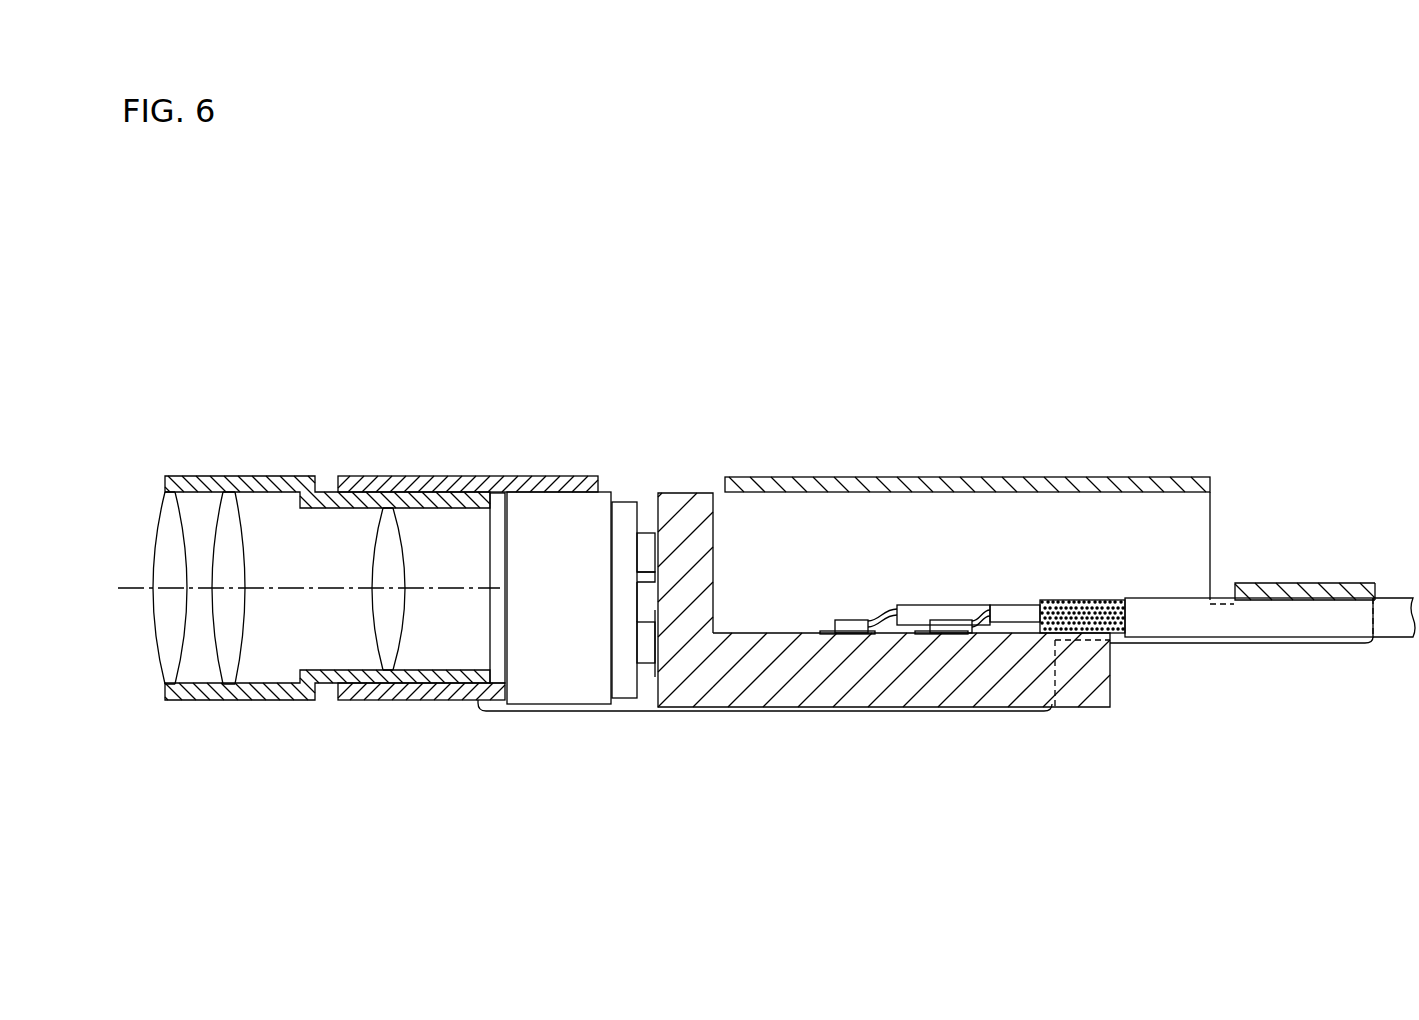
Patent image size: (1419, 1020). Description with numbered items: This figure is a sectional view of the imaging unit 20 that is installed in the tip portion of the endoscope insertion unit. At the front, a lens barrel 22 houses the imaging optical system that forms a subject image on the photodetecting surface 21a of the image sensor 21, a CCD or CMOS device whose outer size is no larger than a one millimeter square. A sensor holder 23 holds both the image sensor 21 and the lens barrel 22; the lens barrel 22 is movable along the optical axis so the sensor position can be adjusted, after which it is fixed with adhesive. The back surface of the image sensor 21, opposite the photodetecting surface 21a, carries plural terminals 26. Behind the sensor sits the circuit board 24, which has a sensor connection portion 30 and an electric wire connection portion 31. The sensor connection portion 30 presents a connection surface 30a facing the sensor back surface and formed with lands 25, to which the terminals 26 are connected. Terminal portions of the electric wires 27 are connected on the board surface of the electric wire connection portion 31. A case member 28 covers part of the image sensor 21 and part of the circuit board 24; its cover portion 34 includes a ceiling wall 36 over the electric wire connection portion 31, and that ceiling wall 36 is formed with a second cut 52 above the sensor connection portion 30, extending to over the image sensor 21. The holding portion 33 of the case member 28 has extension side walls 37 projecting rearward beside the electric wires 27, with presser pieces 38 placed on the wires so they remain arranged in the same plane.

The imaging unit 20 is at (165, 325).
The image sensor 21 is at (534, 704).
The photodetecting surface 21a is at (503, 628).
The lens barrel 22 is at (237, 476).
The sensor holder 23 is at (421, 476).
The circuit board 24 is at (695, 378).
The lands 25 is at (650, 516).
The terminals 26 is at (641, 533).
The electric wires 27 is at (1170, 632).
The case member 28 is at (1094, 408).
The sensor connection portion 30 is at (688, 493).
The connection surface 30a is at (648, 605).
The electric wire connection portion 31 is at (777, 631).
The holding portion 33 is at (1283, 583).
The cover portion 34 is at (1115, 477).
The ceiling wall 36 is at (952, 477).
The extension side walls 37 is at (1279, 645).
The presser pieces 38 is at (1333, 583).
The second cut 52 is at (710, 485).